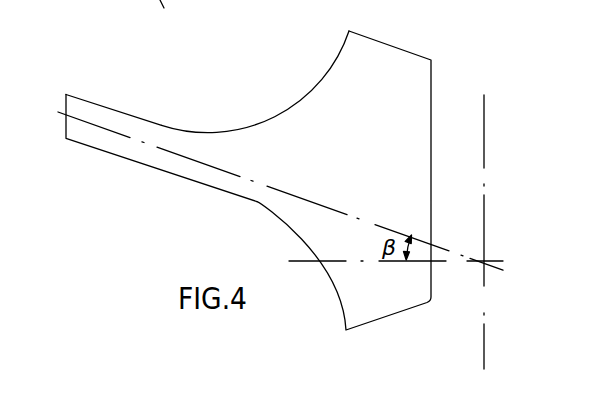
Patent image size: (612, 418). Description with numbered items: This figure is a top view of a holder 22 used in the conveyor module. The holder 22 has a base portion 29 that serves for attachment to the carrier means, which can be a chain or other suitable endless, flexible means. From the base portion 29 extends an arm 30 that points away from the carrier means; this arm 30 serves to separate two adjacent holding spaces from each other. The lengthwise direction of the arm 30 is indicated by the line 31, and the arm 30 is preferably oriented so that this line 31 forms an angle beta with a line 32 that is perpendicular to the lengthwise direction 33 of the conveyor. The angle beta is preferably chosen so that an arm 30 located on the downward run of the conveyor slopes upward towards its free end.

The holder 22 is at (268, 103).
The base portion 29 is at (372, 54).
The arm 30 is at (110, 113).
The line 31 is at (295, 197).
The line 32 is at (389, 262).
The lengthwise direction 33 is at (484, 205).